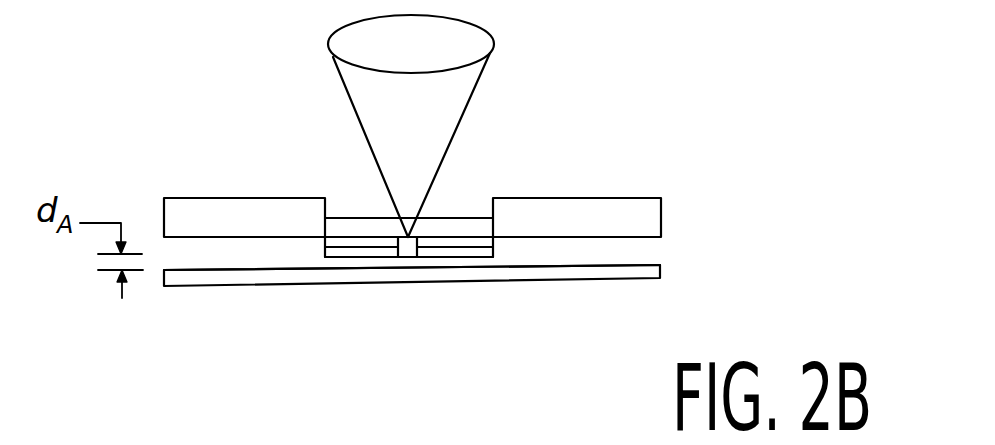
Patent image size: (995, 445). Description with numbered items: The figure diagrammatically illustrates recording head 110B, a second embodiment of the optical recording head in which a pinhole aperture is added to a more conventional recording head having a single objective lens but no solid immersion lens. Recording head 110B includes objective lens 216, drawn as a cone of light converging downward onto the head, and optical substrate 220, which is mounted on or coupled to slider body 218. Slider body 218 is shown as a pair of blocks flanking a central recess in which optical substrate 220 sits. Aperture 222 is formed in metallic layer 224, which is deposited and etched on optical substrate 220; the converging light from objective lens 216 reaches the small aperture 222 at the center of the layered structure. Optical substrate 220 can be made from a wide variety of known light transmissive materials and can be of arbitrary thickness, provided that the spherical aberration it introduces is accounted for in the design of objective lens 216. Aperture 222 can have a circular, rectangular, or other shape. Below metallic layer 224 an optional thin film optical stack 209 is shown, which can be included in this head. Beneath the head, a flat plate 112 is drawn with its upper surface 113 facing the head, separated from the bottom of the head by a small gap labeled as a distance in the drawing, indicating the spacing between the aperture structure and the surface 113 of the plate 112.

The objective lens 216 is at (443, 46).
The slider body 218 is at (226, 216).
The optical substrate 220 is at (442, 227).
The metallic layer 224 is at (381, 248).
The thin film optical stack 209 is at (347, 240).
The aperture 222 is at (417, 256).
The substrate plate 112 is at (658, 270).
The substrate surface 113 is at (630, 265).
The recording head 110B is at (657, 172).